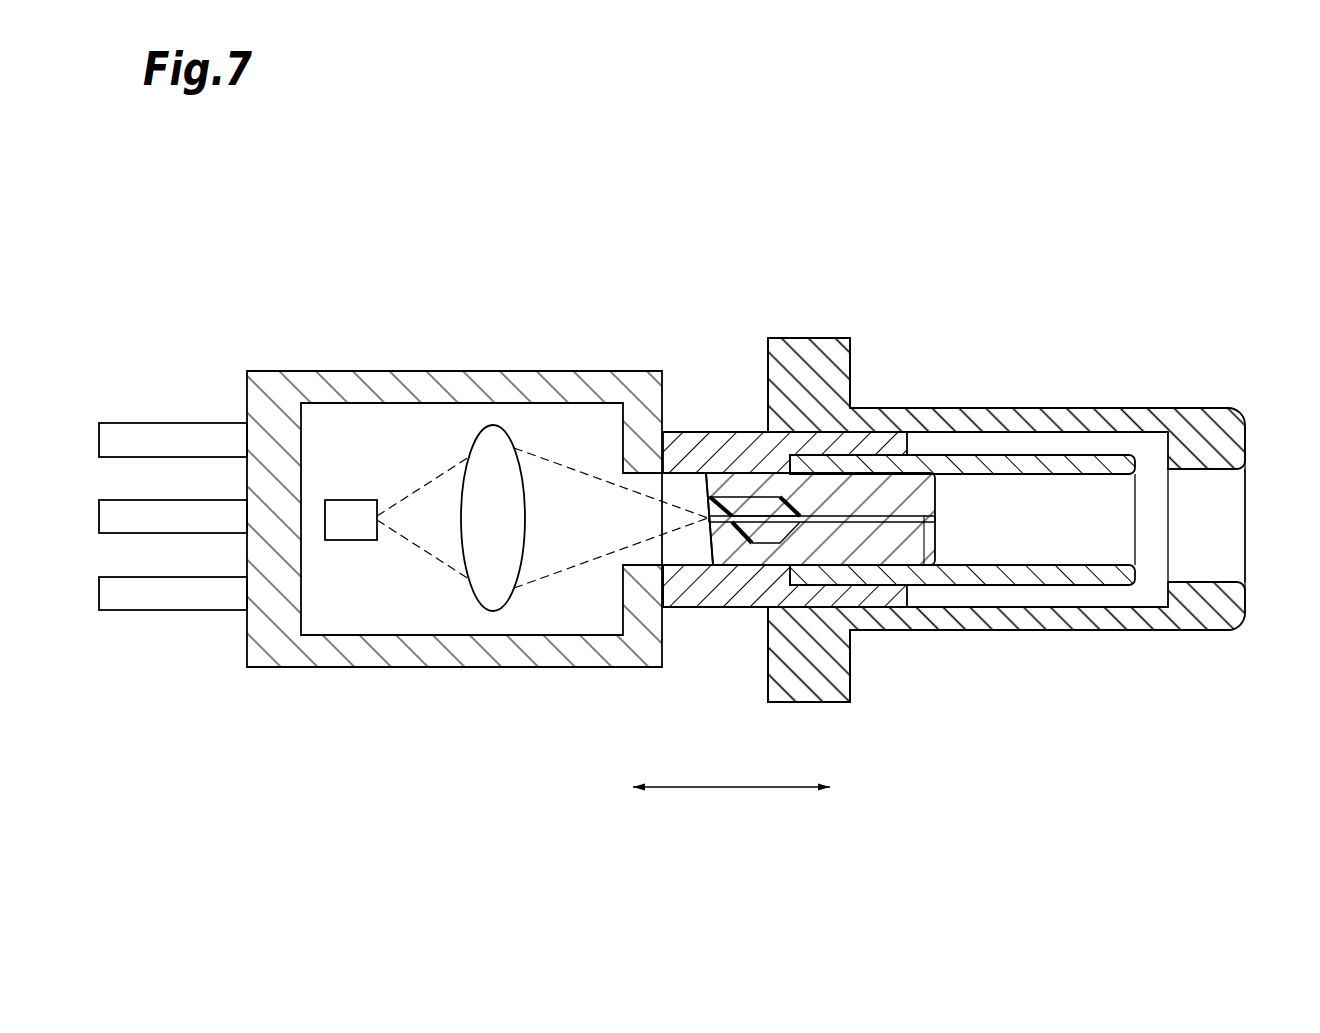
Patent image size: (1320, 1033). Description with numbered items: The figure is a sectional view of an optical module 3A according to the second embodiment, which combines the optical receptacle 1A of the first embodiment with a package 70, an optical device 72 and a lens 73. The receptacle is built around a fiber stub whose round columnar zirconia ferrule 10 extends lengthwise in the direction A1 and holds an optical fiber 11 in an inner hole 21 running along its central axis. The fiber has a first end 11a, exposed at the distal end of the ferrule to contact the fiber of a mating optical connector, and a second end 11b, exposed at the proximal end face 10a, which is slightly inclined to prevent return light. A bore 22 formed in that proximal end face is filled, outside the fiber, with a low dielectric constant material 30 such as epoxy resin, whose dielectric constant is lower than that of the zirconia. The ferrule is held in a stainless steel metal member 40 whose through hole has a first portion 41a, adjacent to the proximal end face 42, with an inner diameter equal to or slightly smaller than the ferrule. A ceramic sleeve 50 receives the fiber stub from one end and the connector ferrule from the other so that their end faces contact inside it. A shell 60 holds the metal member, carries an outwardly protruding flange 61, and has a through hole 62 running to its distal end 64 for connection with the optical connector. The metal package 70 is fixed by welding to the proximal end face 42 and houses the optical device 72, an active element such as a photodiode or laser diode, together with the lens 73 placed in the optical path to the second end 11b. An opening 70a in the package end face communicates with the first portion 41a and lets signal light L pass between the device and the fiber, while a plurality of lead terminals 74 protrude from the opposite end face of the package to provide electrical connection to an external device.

The optical receptacle 1A is at (1030, 690).
The optical module 3A is at (1142, 238).
The ferrule 10 is at (883, 485).
The proximal end face 10a is at (705, 503).
The optical fiber 11 is at (870, 522).
The first end 11a is at (935, 518).
The second end 11b is at (708, 518).
The inner hole 21 is at (923, 565).
The bore 22 is at (765, 543).
The low dielectric constant material 30 is at (738, 497).
The metal member 40 is at (689, 422).
The first portion 41a is at (702, 565).
The proximal end face 42 is at (655, 585).
The sleeve 50 is at (980, 445).
The shell 60 is at (1078, 403).
The flange 61 is at (813, 350).
The through hole 62 is at (1209, 472).
The distal end 64 is at (1248, 430).
The package 70 is at (447, 366).
The opening 70a is at (643, 565).
The optical device 72 is at (347, 528).
The lens 73 is at (493, 597).
The lead terminals 74 is at (168, 432).
The direction A1 is at (737, 788).
The signal light L is at (418, 556).